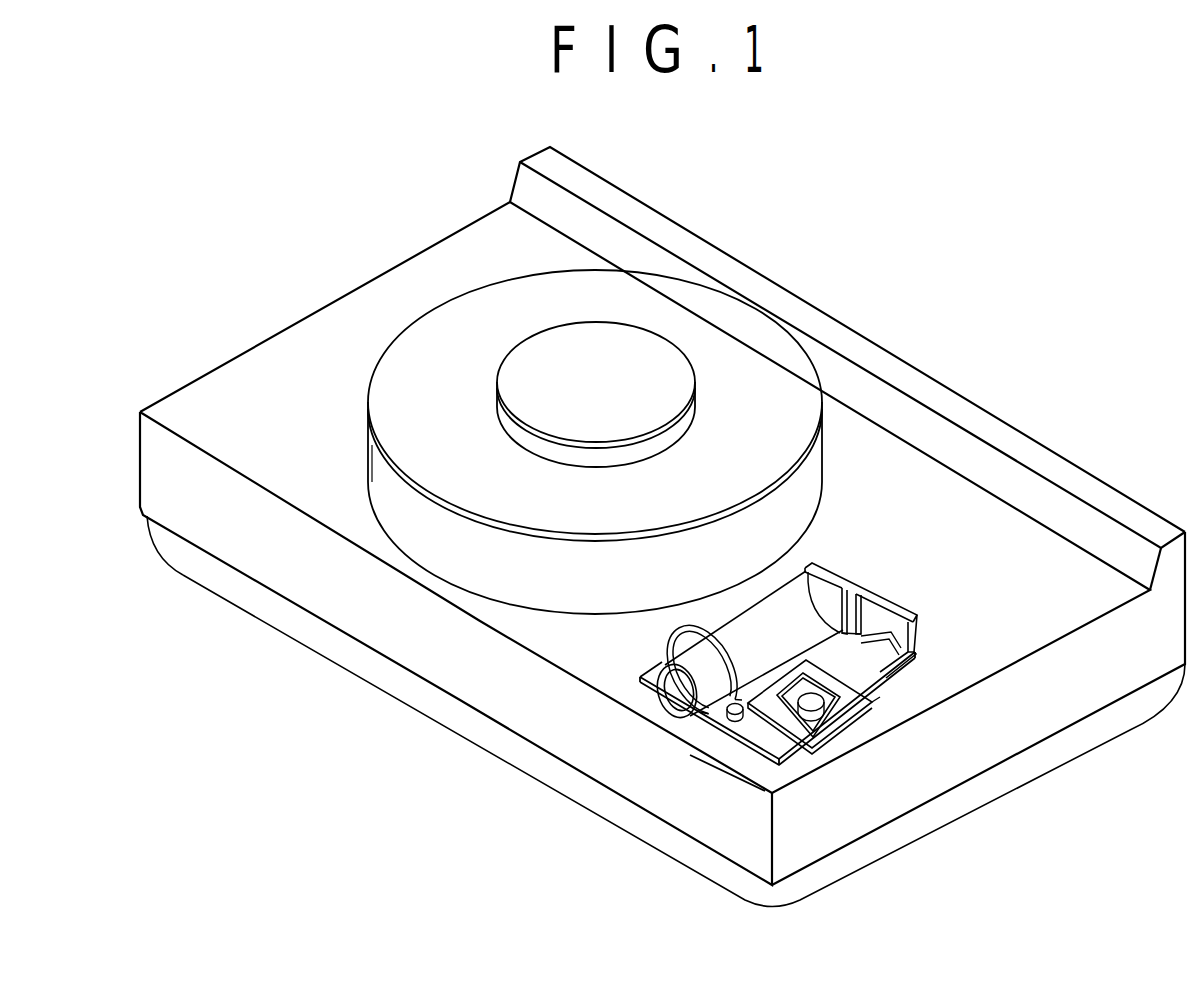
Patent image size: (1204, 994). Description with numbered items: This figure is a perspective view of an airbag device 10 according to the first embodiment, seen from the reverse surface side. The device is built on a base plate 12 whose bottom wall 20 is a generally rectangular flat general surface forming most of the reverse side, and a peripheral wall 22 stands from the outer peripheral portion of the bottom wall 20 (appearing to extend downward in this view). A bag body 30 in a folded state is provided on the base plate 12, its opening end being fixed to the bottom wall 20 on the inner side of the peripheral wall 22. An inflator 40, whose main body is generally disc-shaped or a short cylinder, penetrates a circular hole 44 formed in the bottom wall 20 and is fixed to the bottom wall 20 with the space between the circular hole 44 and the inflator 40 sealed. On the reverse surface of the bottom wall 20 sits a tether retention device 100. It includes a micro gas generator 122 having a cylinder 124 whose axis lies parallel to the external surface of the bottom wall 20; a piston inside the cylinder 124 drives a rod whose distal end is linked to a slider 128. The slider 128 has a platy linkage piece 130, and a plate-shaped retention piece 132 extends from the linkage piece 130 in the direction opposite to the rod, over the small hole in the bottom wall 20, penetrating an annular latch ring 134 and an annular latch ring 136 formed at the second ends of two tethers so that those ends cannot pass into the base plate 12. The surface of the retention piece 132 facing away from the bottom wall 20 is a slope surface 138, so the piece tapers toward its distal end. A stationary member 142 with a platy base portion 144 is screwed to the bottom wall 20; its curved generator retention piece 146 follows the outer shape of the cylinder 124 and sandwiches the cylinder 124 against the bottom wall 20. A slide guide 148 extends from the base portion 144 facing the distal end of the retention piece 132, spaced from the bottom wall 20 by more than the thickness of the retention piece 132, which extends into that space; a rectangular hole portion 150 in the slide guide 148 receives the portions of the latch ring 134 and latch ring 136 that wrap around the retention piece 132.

The airbag device 10 is at (920, 305).
The base plate 12 is at (328, 330).
The bottom wall 20 is at (242, 370).
The peripheral wall 22 is at (213, 540).
The bag body 30 is at (247, 592).
The inflator 40 is at (476, 303).
The circular hole 44 is at (385, 517).
The tether retention device 100 is at (973, 568).
The micro gas generator 122 is at (788, 583).
The cylinder 124 is at (733, 628).
The slider 128 is at (897, 594).
The linkage piece 130 is at (847, 581).
The retention piece 132 is at (917, 653).
The latch ring 134 is at (830, 730).
The latch ring 136 is at (838, 732).
The slope surface 138 is at (913, 640).
The stationary member 142 is at (742, 748).
The base portion 144 is at (752, 750).
The generator retention piece 146 is at (672, 630).
The slide guide 148 is at (876, 694).
The hole portion 150 is at (730, 749).